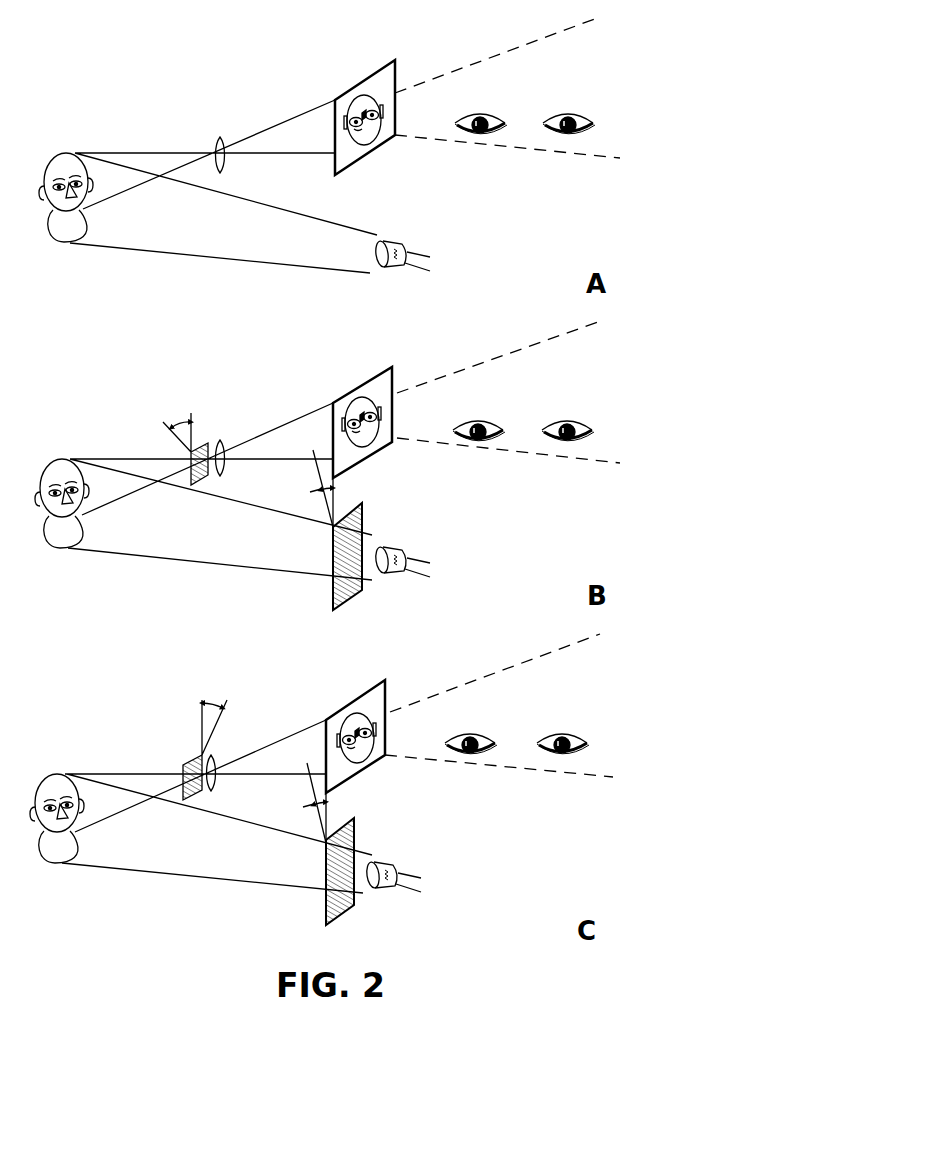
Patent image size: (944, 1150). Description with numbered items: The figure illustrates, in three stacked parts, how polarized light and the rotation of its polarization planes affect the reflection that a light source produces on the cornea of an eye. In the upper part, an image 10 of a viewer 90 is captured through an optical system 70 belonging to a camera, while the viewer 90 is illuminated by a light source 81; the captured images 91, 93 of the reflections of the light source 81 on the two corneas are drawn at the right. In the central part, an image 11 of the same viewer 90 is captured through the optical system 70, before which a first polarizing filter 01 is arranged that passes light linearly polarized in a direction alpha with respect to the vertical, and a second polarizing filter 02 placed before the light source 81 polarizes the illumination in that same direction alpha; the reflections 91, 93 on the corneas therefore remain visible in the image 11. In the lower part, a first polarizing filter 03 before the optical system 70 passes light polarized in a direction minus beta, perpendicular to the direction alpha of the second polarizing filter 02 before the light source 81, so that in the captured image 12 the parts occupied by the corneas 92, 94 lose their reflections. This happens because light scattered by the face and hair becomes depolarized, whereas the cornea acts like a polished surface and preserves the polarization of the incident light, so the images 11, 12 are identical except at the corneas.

The viewer 90 is at (66, 154).
The optical system 70 is at (220, 137).
The image 10 is at (352, 89).
The image 11 is at (350, 393).
The image 12 is at (347, 706).
The light source 81 is at (398, 243).
The captured image of cornea reflection 91 is at (480, 137).
The captured image of cornea reflection 93 is at (568, 137).
The captured image of cornea 92 is at (470, 757).
The captured image of cornea 94 is at (562, 757).
The first polarizing filter 01 is at (200, 484).
The second polarizing filter 02 is at (350, 597).
The first polarizing filter 03 is at (190, 800).